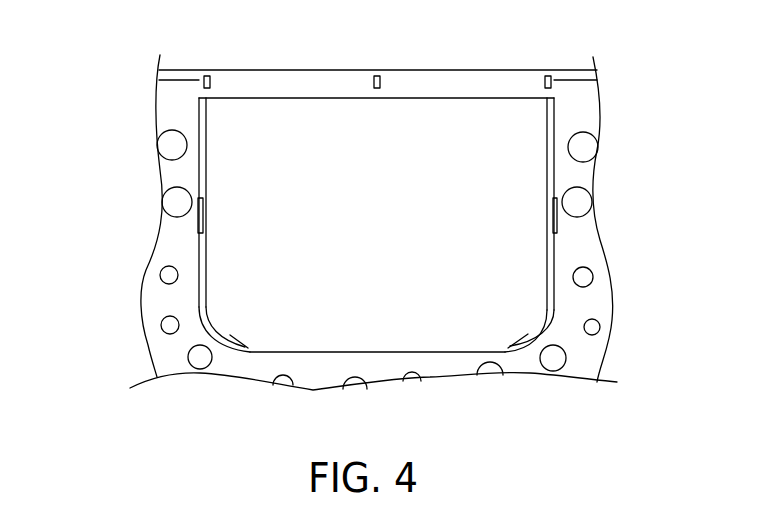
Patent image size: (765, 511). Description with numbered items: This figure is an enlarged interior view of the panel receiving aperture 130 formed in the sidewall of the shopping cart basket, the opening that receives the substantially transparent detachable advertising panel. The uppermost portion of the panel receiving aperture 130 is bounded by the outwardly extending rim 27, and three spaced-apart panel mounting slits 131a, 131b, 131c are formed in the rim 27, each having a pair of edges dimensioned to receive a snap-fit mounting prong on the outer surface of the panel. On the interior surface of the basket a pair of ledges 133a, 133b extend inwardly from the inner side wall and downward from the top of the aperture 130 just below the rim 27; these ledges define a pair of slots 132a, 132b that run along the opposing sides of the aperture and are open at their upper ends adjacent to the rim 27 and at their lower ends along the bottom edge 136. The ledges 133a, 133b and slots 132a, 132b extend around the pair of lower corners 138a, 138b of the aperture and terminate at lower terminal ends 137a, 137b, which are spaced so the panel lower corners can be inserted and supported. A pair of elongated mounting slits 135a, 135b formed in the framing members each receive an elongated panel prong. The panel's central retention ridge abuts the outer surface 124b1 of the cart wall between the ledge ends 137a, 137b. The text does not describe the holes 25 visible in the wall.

The outwardly extending rim 27 is at (512, 82).
The panel mounting slit 131a is at (207, 76).
The panel mounting slit 131b is at (376, 76).
The panel mounting slit 131c is at (548, 76).
The panel receiving aperture 130 is at (504, 196).
The slot 132a is at (203, 188).
The slot 132b is at (548, 128).
The ledge 133a is at (200, 131).
The ledge 133b is at (600, 275).
The elongated mounting slit 135a is at (200, 228).
The elongated mounting slit 135b is at (557, 228).
The bottom edge 136 is at (430, 352).
The lower terminal end of ledge 137a is at (250, 352).
The lower terminal end of ledge 137b is at (533, 343).
The lower corner 138a is at (207, 315).
The lower corner 138b is at (553, 315).
The fastener holes 25 is at (580, 151).
The outer surface of cart wall 124b1 is at (261, 367).